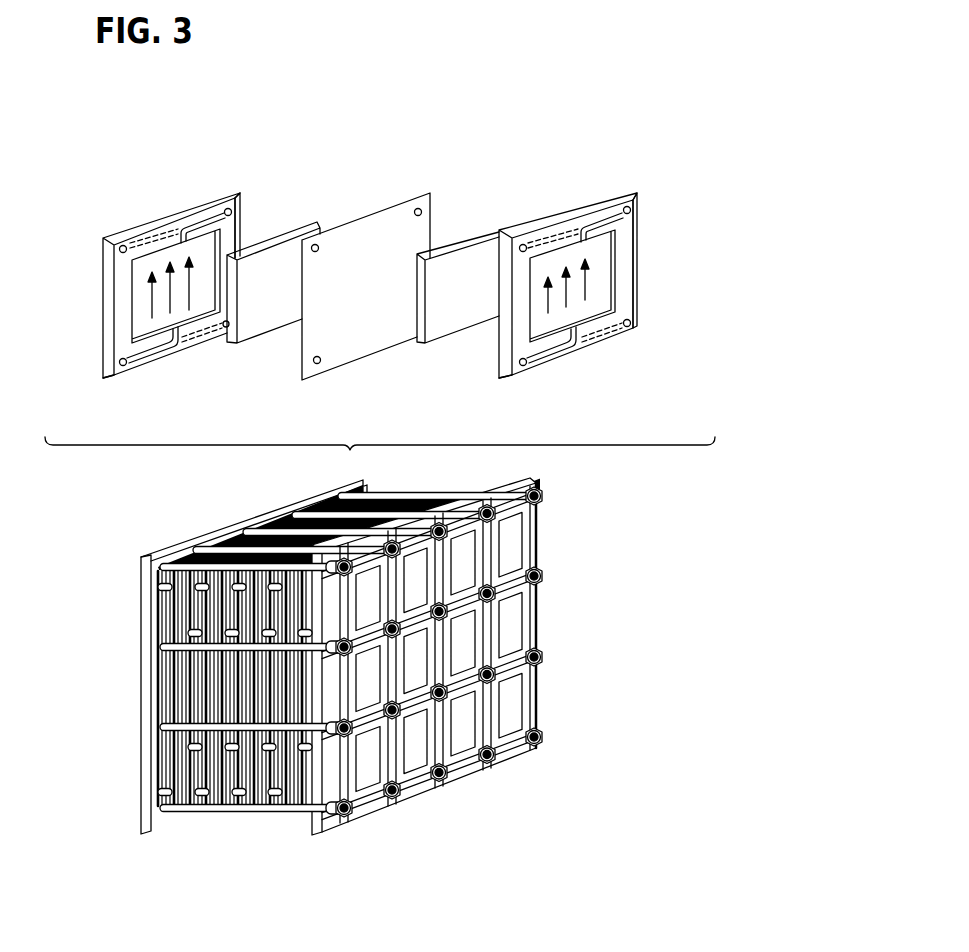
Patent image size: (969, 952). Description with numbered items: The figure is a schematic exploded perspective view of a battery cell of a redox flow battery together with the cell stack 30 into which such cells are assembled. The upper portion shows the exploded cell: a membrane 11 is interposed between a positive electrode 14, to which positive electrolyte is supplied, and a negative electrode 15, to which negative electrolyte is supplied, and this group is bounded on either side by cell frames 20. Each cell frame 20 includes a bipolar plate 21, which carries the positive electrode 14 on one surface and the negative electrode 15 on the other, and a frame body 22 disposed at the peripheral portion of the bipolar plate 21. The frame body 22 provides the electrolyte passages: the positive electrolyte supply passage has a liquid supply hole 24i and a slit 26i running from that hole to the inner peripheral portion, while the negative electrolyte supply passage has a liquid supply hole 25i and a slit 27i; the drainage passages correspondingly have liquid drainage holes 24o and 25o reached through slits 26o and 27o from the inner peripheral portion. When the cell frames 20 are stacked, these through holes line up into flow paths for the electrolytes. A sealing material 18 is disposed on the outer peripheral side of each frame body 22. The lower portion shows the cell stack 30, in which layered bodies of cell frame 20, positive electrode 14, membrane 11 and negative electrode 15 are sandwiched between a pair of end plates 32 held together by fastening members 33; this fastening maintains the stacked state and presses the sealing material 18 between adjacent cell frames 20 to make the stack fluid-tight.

The membrane 11 is at (345, 345).
The positive electrode 14 is at (271, 323).
The negative electrode 15 is at (450, 323).
The sealing material 18 is at (243, 232).
The cell frame 20 is at (246, 200).
The bipolar plate 21 is at (143, 320).
The frame body 22 is at (122, 288).
The liquid drainage hole 24o is at (242, 196).
The liquid supply hole 24i is at (104, 377).
The liquid drainage hole 25o is at (122, 246).
The liquid supply hole 25i is at (228, 328).
The slit 26o is at (177, 230).
The slit 26i is at (140, 365).
The slit 27o is at (140, 223).
The slit 27i is at (185, 360).
The cell stack 30 is at (391, 683).
The end plate 32 is at (140, 578).
The fastening member 33 is at (548, 659).